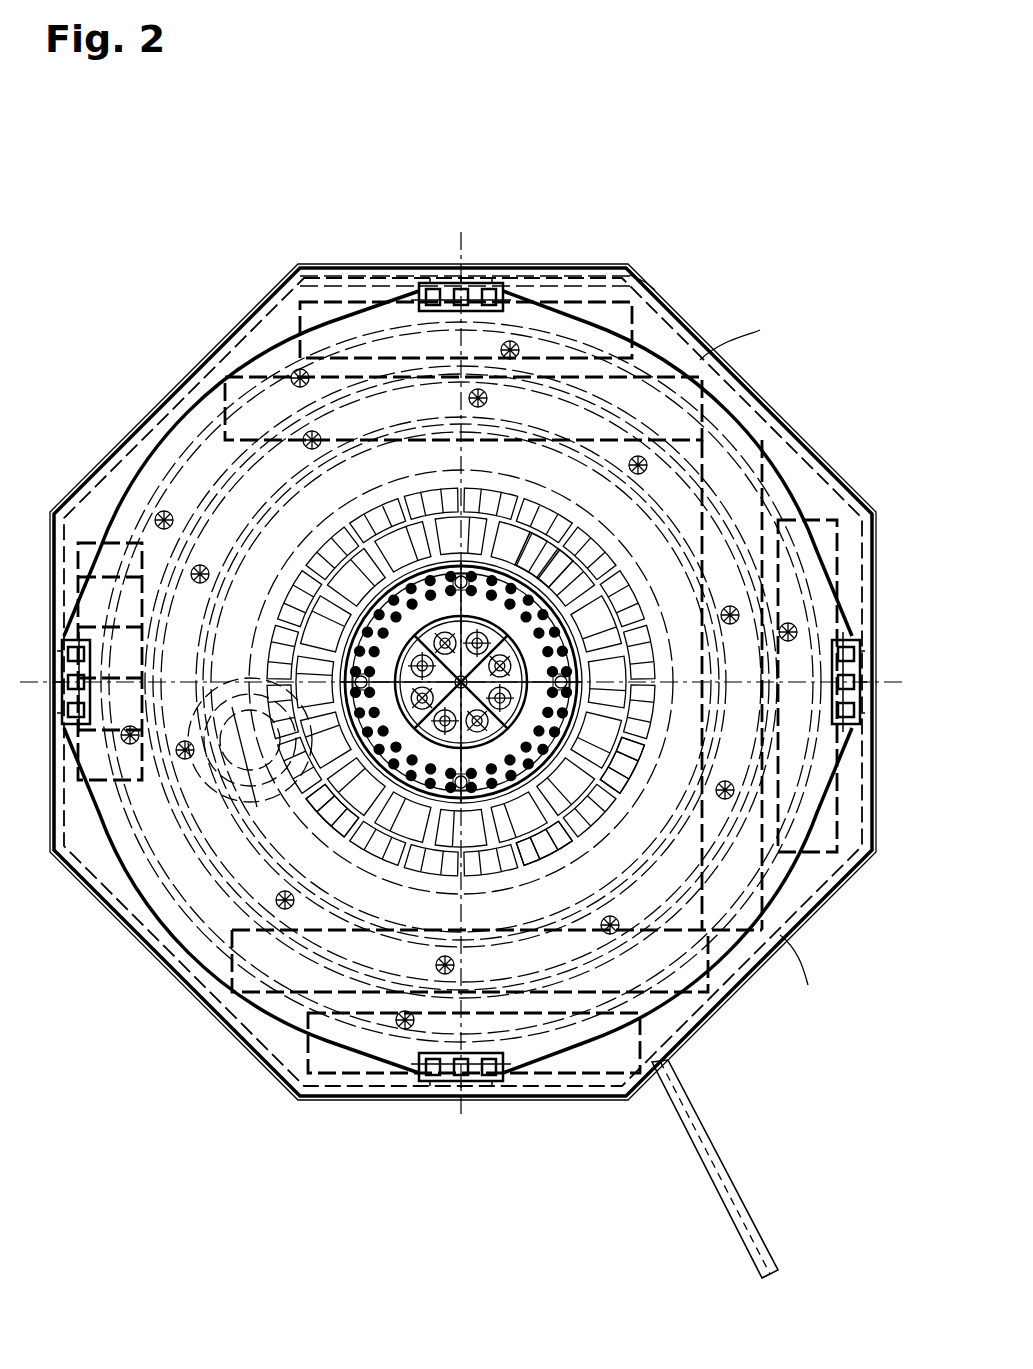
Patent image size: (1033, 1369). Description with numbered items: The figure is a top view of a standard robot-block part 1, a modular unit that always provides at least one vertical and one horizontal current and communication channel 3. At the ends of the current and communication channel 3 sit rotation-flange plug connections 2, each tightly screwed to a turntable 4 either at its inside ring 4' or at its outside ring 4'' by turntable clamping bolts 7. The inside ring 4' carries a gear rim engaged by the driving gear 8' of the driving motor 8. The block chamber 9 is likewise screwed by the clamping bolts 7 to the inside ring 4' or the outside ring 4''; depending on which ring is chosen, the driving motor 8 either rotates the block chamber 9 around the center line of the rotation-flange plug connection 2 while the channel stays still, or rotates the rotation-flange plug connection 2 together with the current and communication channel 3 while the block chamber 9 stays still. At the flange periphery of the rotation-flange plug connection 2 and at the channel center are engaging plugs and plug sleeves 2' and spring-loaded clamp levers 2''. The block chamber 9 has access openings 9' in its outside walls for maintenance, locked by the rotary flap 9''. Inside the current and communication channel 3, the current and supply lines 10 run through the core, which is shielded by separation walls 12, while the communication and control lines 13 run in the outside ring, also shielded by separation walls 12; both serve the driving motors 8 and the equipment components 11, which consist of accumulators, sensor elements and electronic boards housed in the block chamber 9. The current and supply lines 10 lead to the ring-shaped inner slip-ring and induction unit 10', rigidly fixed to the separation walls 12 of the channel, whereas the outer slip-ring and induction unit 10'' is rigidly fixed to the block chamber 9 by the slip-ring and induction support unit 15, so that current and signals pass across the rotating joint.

The standard robot-block part 1 is at (613, 263).
The rotation-flange plug connection 2 is at (463, 682).
The engaging plugs and plug sleeves 2' is at (461, 655).
The spring-loaded clamp levers 2'' is at (461, 729).
The current and communication channel 3 is at (548, 580).
The turntable 4 is at (457, 793).
The inside ring 4' is at (461, 682).
The outside ring 4'' is at (466, 274).
The turntable clamping bolts 7 is at (262, 890).
The driving motor 8 is at (451, 682).
The driving gear 8' is at (250, 769).
The block chamber 9 is at (695, 277).
The access openings 9' is at (779, 999).
The rotary flap 9'' is at (434, 1134).
The current and supply lines 10 is at (469, 682).
The inner slip-ring and induction unit 10' is at (543, 868).
The outer slip-ring and induction unit 10'' is at (330, 829).
The equipment components 11 is at (700, 388).
The separation walls 12 is at (535, 785).
The communication and control lines 13 is at (595, 725).
The slip-ring and induction support unit 15 is at (258, 578).